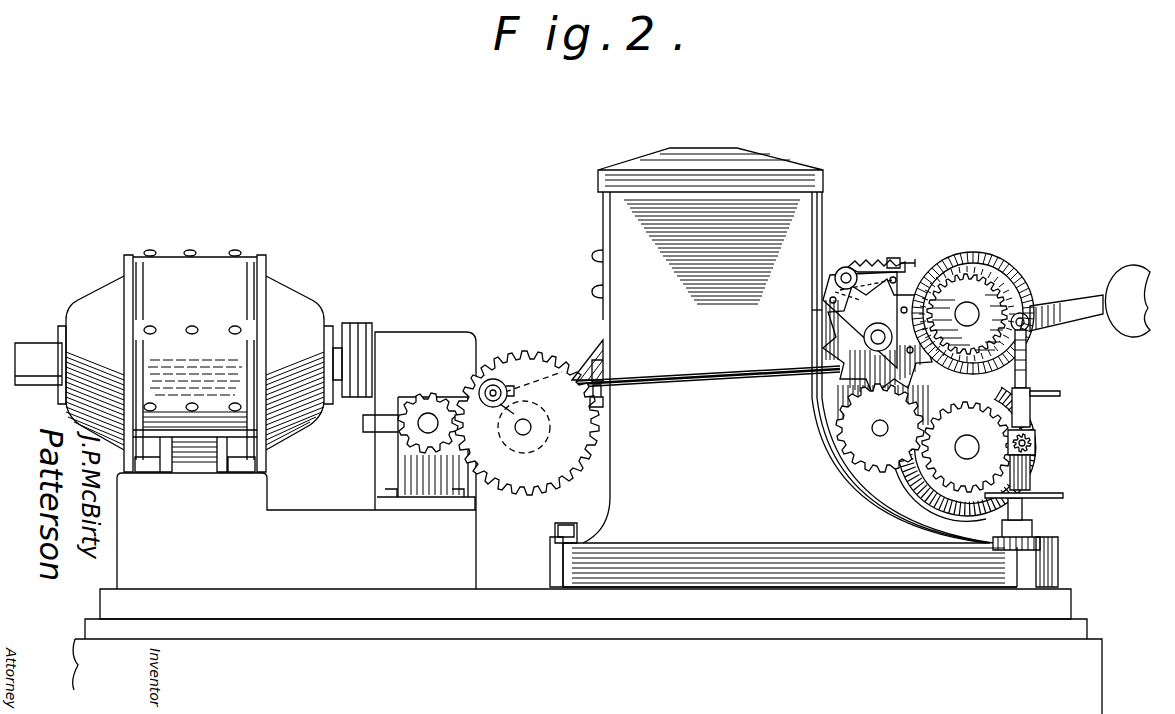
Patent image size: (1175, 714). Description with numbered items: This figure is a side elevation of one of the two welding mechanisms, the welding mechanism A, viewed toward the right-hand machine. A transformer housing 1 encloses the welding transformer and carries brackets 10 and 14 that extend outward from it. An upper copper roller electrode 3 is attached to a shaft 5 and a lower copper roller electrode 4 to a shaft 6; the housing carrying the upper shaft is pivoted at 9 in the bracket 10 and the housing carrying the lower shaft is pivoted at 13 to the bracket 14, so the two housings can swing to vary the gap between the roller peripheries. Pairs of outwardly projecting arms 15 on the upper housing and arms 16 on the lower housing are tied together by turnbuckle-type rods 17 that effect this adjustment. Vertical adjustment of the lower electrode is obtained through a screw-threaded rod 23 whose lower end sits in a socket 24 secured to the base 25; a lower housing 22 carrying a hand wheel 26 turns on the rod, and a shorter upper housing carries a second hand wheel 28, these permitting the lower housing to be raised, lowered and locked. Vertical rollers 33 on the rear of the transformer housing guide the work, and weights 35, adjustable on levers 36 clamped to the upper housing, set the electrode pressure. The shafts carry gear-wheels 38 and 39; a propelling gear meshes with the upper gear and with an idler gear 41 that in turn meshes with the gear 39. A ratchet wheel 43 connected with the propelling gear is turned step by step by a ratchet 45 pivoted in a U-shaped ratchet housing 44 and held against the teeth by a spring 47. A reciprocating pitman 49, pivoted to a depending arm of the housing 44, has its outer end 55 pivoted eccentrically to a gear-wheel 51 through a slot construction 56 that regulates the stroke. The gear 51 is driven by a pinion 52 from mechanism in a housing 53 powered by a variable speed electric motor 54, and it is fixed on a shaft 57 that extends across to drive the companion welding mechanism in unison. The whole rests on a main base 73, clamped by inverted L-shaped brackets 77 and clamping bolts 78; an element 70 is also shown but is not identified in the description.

The transformer housing 1 is at (703, 345).
The upper copper roller electrode 3 is at (971, 252).
The lower copper roller electrode 4 is at (920, 497).
The shaft 5 is at (968, 314).
The shaft 6 is at (968, 440).
The pivot 9 is at (872, 339).
The bracket 10 is at (818, 318).
The pivot 13 is at (879, 433).
The bracket 14 is at (818, 432).
The outwardly projecting arms 15 is at (1030, 322).
The outwardly projecting arms 16 is at (1036, 443).
The adjustable rods 17 is at (1032, 389).
The lower housing 22 is at (1032, 466).
The screw-threaded rod 23 is at (1033, 374).
The socket or seat 24 is at (988, 546).
The base 25 is at (686, 565).
The hand wheel 26 is at (1066, 493).
The hand wheel 28 is at (1062, 393).
The vertical rollers 33 is at (603, 380).
The weights 35 is at (1133, 272).
The levers 36 is at (1058, 304).
The gear-wheel 38 is at (978, 282).
The gear-wheel 39 is at (1036, 428).
The idler gear 41 is at (826, 462).
The ratchet wheel 43 is at (840, 333).
The ratchet housing 44 is at (880, 337).
The ratchet 45 is at (895, 257).
The spring 47 is at (853, 260).
The pitman 49 is at (712, 382).
The gear-wheel 51 is at (542, 370).
The pinion 52 is at (428, 410).
The housing 53 is at (430, 335).
The variable speed electric motor 54 is at (245, 419).
The outer end of pitman 55 is at (496, 383).
The slot construction 56 is at (503, 415).
The shaft 57 is at (531, 427).
The bolt 70 is at (578, 523).
The main base 73 is at (585, 604).
The inverted L-shaped brackets 77 is at (549, 566).
The clamping bolts 78 is at (1040, 532).
The welding mechanism A is at (587, 666).